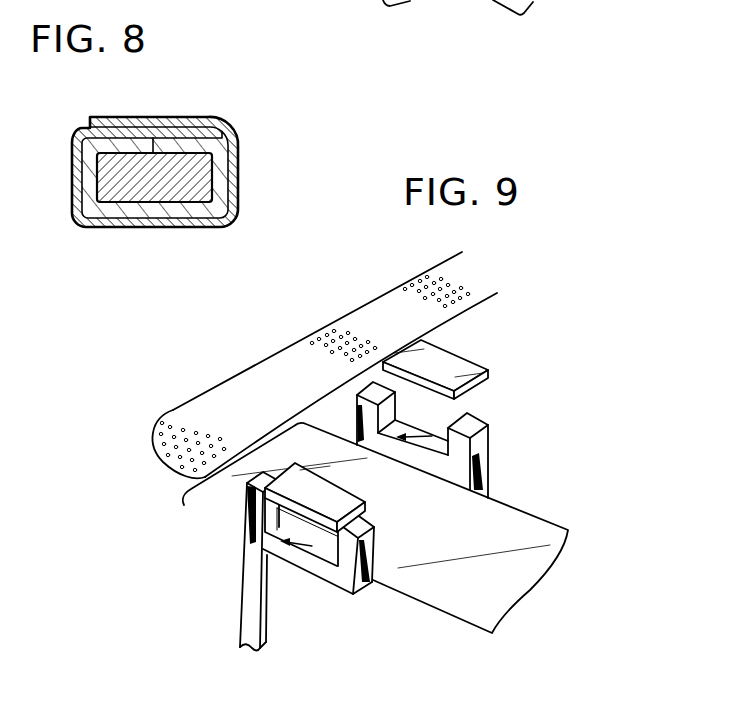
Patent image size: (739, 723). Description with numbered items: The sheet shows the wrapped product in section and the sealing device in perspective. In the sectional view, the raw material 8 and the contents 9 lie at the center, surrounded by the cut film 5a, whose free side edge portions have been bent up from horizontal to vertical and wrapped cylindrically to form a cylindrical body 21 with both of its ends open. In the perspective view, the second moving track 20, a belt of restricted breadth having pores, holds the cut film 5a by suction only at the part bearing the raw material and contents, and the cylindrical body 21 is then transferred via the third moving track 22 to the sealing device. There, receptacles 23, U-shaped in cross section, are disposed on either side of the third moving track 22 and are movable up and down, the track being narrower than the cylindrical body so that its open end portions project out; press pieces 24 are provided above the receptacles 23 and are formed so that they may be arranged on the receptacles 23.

In FIG. 8, the cylindrical body 21 is at (192, 173).
In FIG. 8, the cut film 5a is at (239, 171).
In FIG. 8, the raw material 8 is at (147, 208).
In FIG. 8, the contents 9 is at (183, 187).
In FIG. 9, the second moving track 20 is at (240, 406).
In FIG. 9, the third moving track 22 is at (462, 540).
In FIG. 9, the receptacle 23 is at (477, 463).
In FIG. 9, the press piece 24 is at (437, 366).